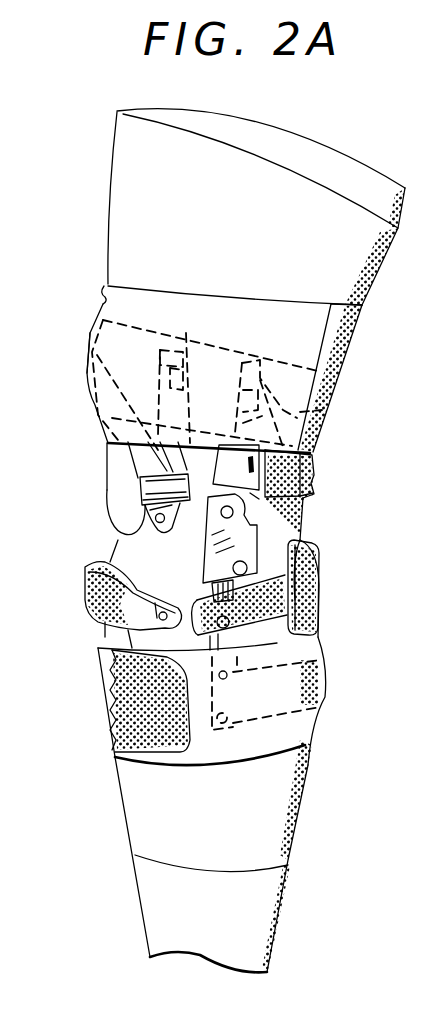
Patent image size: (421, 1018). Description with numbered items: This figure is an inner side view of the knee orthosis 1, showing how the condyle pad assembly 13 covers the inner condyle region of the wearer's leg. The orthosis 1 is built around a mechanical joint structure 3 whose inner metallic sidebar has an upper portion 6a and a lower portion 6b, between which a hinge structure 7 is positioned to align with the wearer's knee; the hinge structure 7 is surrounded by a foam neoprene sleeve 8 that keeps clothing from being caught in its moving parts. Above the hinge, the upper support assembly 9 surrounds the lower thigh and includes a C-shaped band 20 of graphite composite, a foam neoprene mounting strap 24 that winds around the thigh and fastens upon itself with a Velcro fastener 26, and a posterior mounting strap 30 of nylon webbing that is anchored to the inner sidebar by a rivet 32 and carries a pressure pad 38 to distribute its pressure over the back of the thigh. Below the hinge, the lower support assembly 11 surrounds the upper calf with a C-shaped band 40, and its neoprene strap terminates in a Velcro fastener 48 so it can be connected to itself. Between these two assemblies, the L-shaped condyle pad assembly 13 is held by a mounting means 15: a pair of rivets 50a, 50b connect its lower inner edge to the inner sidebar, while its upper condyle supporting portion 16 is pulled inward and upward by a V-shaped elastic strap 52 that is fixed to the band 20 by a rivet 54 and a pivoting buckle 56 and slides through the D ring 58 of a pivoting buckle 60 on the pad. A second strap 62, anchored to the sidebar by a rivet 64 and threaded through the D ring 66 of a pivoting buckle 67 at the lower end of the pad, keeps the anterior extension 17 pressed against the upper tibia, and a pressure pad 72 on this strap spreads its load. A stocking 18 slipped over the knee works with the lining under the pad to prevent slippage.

The knee orthosis 1 is at (98, 141).
The stocking 18 is at (211, 206).
The foam neoprene mounting strap 24 is at (102, 288).
The C-shaped band 20 is at (97, 318).
The pivoting buckle 56 is at (88, 367).
The rivet 54 is at (187, 335).
The rivet 32 is at (264, 346).
The Velcro fastener 26 is at (343, 360).
The upper portion of sidebar 6a is at (322, 410).
The condyle supporting portion 16 is at (177, 480).
The upper support assembly 9 is at (221, 384).
The V-shaped elastic strap 52 is at (128, 456).
The D ring 58 is at (189, 508).
The pivoting buckle 60 is at (132, 509).
The mounting means 15 is at (122, 491).
The sleeve 8 is at (242, 477).
The mechanical joint structure 3 is at (302, 507).
The hinge structure 7 is at (256, 506).
The posterior mounting strap 30 is at (313, 462).
The pressure pad 38 is at (314, 490).
The lower portion of sidebar 6b is at (300, 572).
The condyle pad assembly 13 is at (193, 592).
The strap 62 is at (88, 602).
The rivet 50a is at (219, 616).
The pressure pad 72 is at (318, 628).
The anterior extension 17 is at (100, 637).
The pivoting buckle 67 is at (110, 668).
The D ring 66 is at (151, 701).
The lower support assembly 11 is at (153, 741).
The rivet 64 is at (238, 673).
The rivet 50b is at (238, 673).
The C-shaped band 40 is at (327, 700).
The Velcro fastener 48 is at (182, 750).